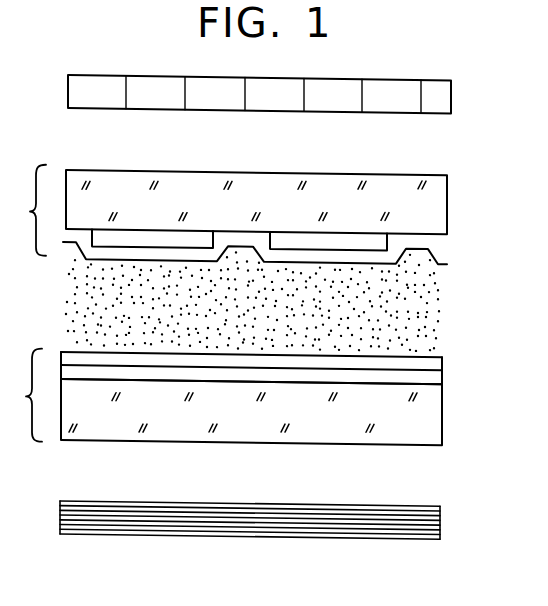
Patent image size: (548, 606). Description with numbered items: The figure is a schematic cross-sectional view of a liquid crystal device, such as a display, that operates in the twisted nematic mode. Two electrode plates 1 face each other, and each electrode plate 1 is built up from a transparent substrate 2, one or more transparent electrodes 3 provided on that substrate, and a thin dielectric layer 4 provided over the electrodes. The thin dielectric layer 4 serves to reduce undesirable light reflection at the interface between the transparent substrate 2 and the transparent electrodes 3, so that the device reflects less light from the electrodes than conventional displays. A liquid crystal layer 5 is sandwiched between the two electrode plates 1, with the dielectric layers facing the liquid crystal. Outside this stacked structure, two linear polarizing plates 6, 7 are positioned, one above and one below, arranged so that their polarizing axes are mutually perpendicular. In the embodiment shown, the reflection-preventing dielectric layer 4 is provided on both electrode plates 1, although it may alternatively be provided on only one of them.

The electrode plate 1 is at (27, 302).
The transparent substrate 2 is at (447, 197).
The transparent electrode 3 is at (389, 240).
The thin dielectric layer 4 is at (390, 256).
The liquid crystal layer 5 is at (434, 318).
The linear polarizing plate 6 is at (453, 95).
The linear polarizing plate 7 is at (441, 518).